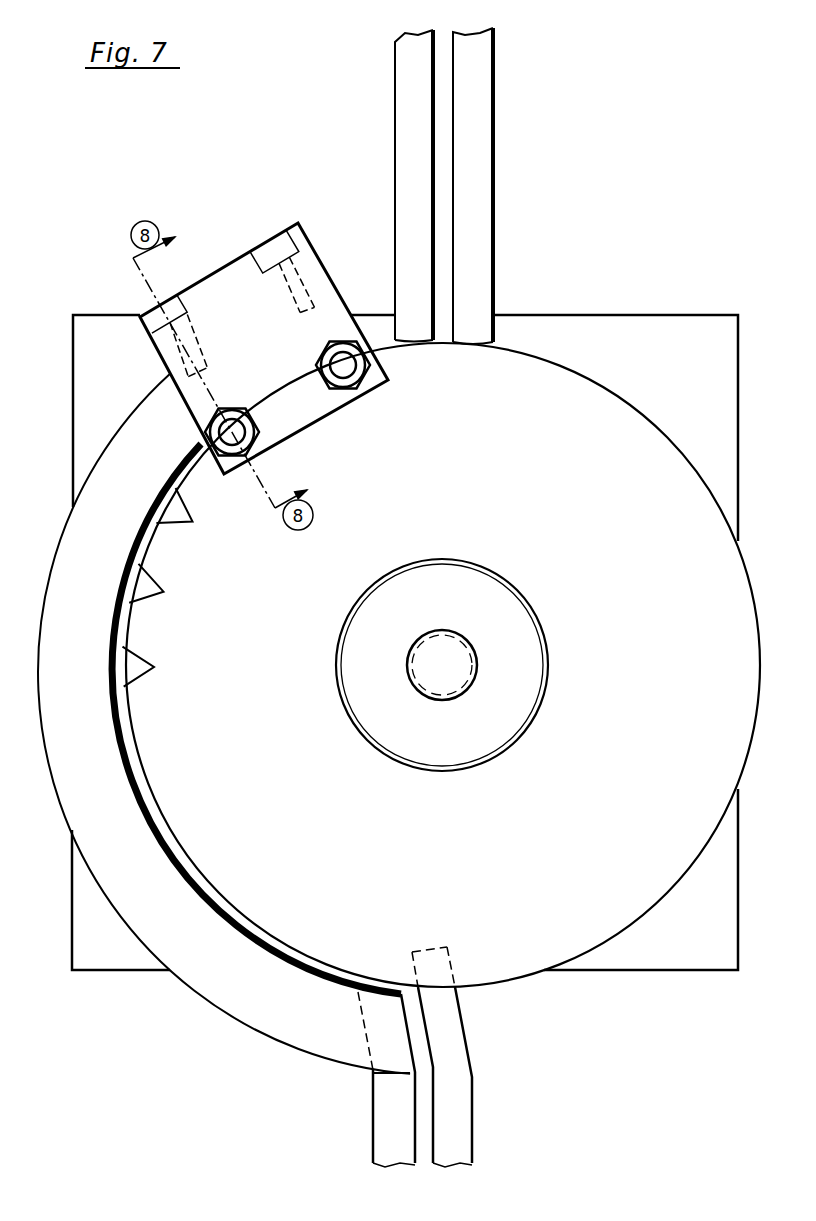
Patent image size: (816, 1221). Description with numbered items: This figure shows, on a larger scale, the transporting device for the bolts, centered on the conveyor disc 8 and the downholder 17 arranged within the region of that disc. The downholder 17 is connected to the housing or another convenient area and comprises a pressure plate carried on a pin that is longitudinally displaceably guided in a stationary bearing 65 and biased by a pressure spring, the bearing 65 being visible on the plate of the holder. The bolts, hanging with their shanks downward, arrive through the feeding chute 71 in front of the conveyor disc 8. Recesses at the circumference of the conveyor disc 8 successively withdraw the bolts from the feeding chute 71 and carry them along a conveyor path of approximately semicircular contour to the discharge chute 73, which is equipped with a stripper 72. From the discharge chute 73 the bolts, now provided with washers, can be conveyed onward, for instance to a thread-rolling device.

The conveyor disc 8 is at (632, 432).
The downholder 17 is at (337, 281).
The stationary bearing 65 is at (323, 402).
The feeding chute 71 is at (483, 125).
The stripper 72 is at (455, 1045).
The discharge chute 73 is at (460, 1152).